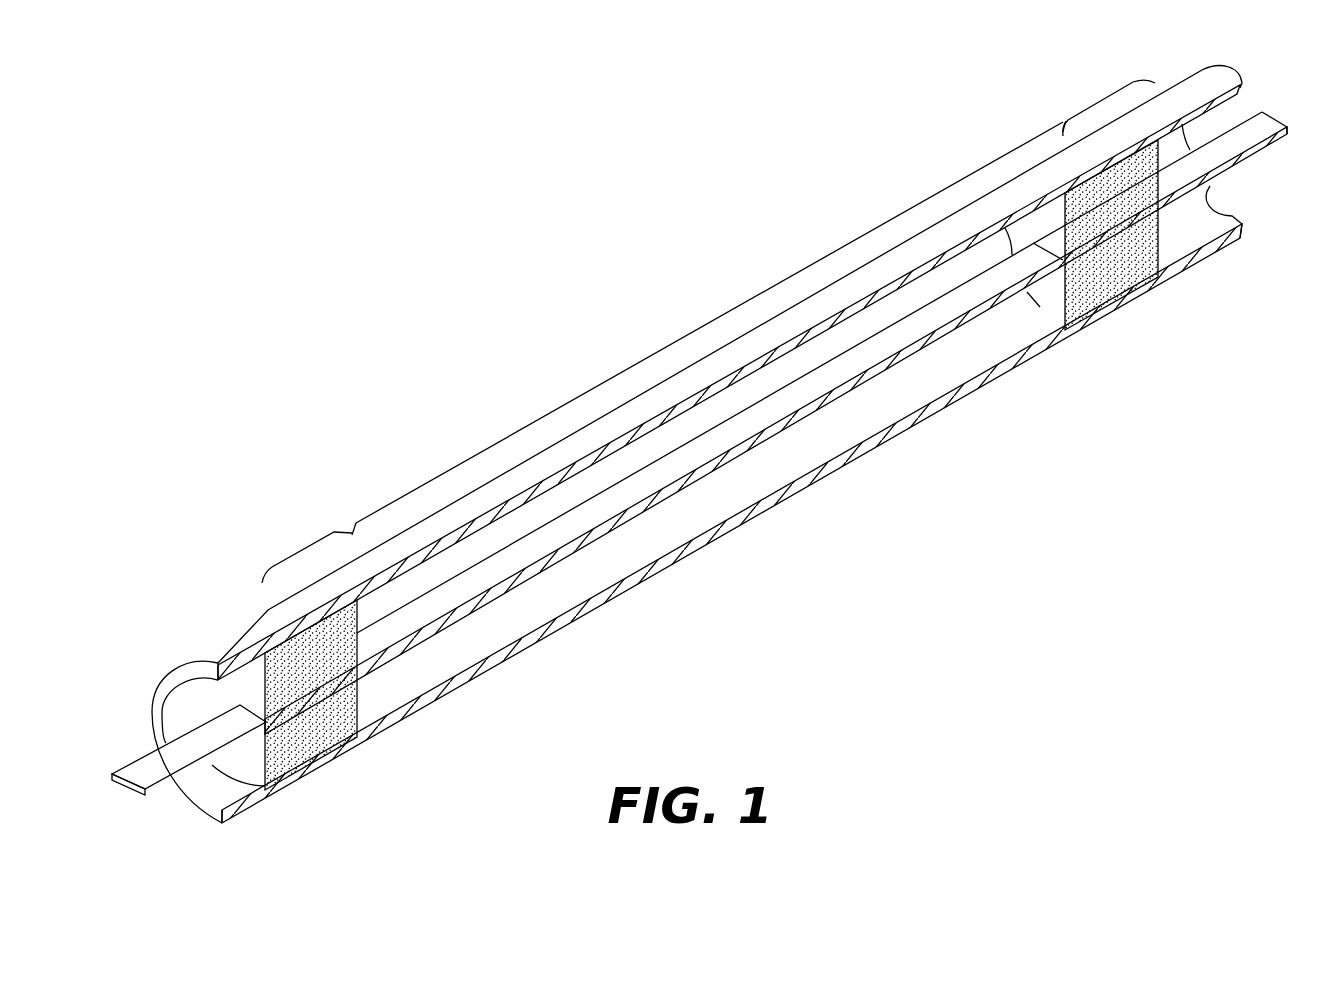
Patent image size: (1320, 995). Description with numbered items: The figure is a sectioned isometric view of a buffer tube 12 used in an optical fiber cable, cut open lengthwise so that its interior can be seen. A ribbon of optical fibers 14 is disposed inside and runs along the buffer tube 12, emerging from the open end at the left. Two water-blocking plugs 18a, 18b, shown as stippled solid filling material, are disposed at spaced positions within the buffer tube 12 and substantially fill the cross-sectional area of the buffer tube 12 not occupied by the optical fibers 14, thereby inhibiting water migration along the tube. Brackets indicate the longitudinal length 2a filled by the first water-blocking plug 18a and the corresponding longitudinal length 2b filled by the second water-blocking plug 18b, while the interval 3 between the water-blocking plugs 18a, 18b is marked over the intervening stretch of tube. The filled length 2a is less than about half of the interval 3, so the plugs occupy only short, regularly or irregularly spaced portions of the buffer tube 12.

The longitudinal length filled by water-blocking plug 2a is at (303, 552).
The longitudinal length filled by water-blocking plug 2b is at (1108, 97).
The interval between water-blocking plugs 3 is at (703, 326).
The buffer tube 12 is at (950, 400).
The ribbon of optical fibers 14 is at (132, 779).
The water-blocking plug 18a is at (337, 727).
The water-blocking plug 18b is at (1118, 270).